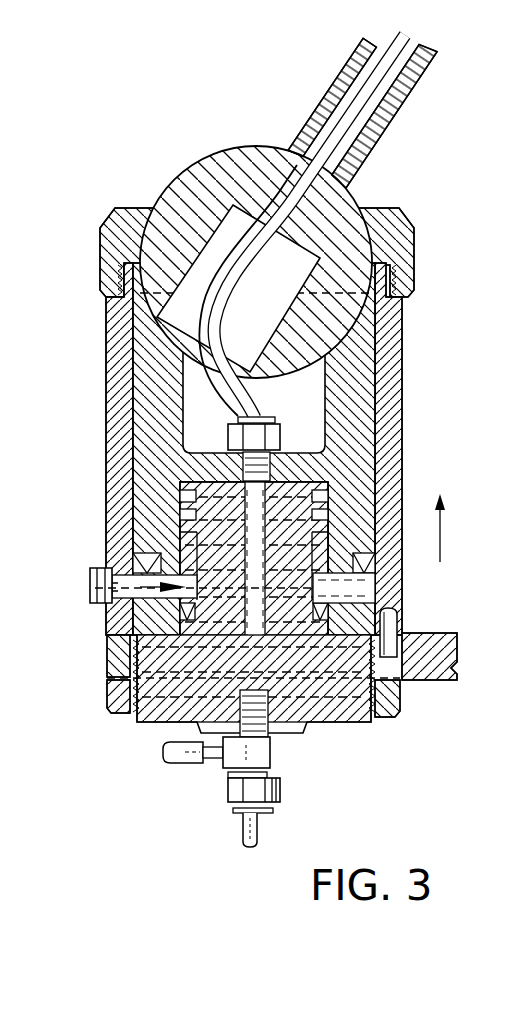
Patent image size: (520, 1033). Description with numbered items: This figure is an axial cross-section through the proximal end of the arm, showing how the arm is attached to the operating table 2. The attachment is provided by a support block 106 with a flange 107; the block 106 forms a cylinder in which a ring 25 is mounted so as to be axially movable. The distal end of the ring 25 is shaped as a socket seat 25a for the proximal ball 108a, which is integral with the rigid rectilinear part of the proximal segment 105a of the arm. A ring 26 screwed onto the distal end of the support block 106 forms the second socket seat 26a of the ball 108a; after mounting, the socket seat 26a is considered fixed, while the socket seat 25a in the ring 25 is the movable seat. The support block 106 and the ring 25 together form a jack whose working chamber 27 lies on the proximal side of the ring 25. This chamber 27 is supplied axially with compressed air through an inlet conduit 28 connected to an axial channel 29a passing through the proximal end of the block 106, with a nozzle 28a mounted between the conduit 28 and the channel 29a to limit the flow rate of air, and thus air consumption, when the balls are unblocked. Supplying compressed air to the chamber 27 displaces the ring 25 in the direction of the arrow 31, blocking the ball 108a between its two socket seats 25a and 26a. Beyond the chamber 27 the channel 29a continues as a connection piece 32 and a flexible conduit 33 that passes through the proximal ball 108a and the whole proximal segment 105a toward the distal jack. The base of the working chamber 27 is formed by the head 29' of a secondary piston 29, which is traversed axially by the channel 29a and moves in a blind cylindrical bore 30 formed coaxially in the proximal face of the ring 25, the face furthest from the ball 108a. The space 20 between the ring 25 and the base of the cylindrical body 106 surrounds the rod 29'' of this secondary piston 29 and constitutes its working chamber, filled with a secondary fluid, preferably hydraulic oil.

The operating table 2 is at (437, 640).
The space 20 is at (360, 590).
The ring 25 is at (363, 407).
The socket seat 25a is at (345, 316).
The ring 26 is at (400, 231).
The socket seat 26a is at (362, 236).
The working chamber 27 is at (303, 482).
The compressed air inlet conduit 28 is at (262, 827).
The nozzle 28a is at (190, 765).
The secondary piston 29 is at (211, 607).
The head 29' is at (188, 500).
The rod 29'' is at (230, 696).
The axial channel 29a is at (253, 667).
The blind cylindrical bore 30 is at (127, 547).
The arrow 31 is at (440, 540).
The connection piece 32 is at (237, 440).
The flexible conduit 33 is at (237, 380).
The proximal segment 105a is at (312, 90).
The support block 106 is at (398, 356).
The flange 107 is at (397, 703).
The proximal ball 108a is at (213, 170).